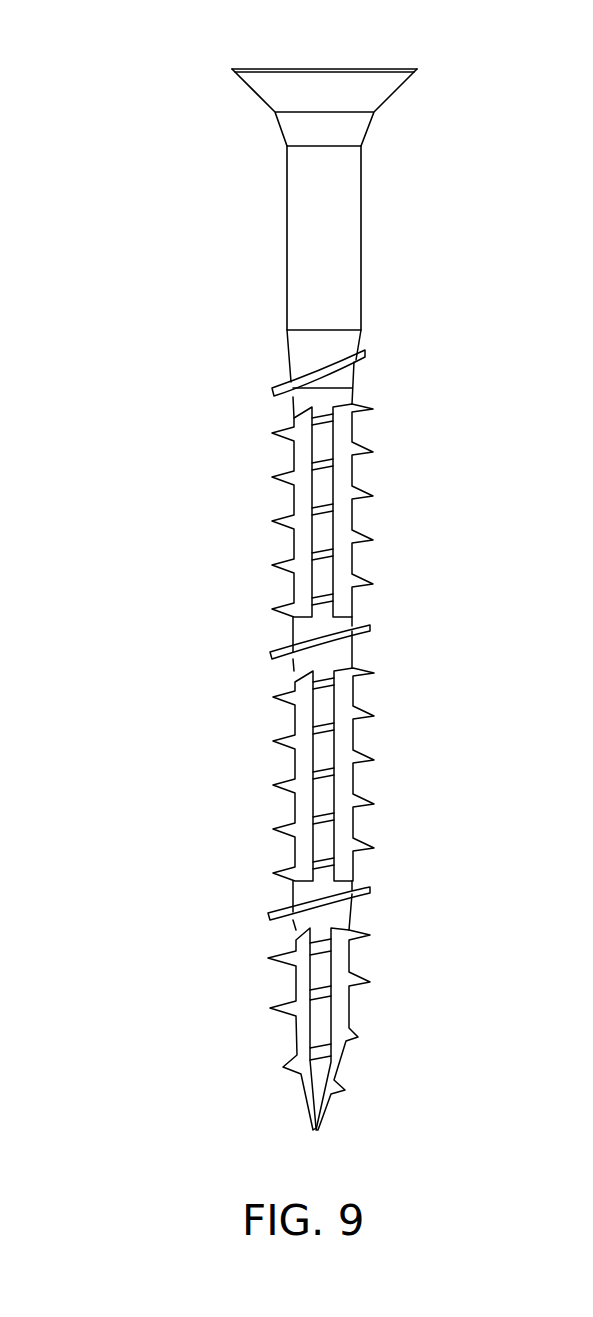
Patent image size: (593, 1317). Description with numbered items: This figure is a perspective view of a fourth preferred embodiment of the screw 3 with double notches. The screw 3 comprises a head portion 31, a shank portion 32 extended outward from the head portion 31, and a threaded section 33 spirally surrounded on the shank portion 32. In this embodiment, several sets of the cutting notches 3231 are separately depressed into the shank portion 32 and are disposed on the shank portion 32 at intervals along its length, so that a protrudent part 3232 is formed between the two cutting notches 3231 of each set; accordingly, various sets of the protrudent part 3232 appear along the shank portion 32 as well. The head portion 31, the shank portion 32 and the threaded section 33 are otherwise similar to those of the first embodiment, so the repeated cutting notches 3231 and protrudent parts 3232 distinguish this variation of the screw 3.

The screw 3 is at (108, 192).
The head portion 31 is at (373, 84).
The shank portion 32 is at (293, 632).
The threaded section 33 is at (278, 913).
The cutting notches 3231 is at (293, 762).
The protrudent part 3232 is at (330, 838).